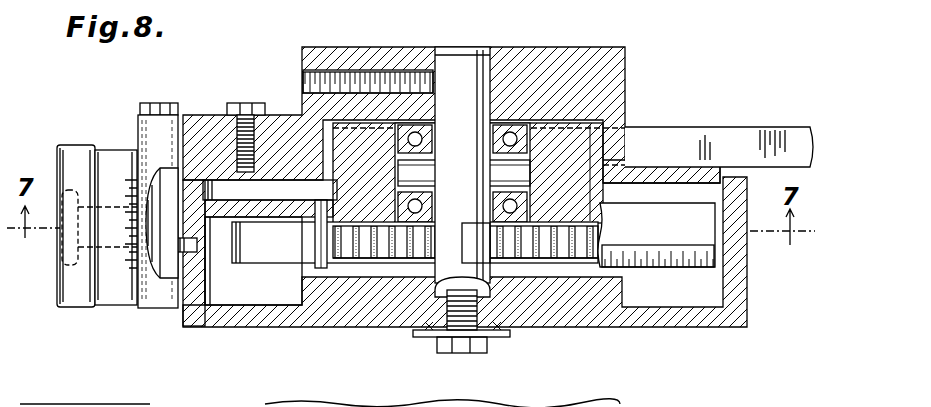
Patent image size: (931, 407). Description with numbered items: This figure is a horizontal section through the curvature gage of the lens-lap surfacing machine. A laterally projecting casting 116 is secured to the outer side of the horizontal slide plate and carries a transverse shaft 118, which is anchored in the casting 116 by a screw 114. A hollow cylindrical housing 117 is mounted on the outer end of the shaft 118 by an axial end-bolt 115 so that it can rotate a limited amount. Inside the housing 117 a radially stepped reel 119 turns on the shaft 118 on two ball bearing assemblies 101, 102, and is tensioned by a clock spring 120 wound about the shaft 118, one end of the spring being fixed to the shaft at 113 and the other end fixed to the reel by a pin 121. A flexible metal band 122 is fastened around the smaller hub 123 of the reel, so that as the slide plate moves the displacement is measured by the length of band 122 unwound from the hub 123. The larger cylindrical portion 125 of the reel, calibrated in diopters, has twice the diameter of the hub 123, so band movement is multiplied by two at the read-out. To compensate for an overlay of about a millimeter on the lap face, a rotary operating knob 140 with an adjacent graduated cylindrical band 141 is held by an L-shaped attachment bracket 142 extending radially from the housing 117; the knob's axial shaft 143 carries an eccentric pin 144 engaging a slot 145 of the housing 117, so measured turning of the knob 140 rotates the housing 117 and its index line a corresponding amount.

The ball bearing assembly 101 is at (503, 141).
The ball bearing assembly 102 is at (420, 212).
The spring fixing point 113 is at (466, 255).
The screw 114 is at (398, 73).
The axial end-bolt 115 is at (451, 347).
The casting 116 is at (625, 86).
The hollow cylindrical housing 117 is at (662, 328).
The transverse shaft 118 is at (486, 69).
The radially stepped reel 119 is at (224, 266).
The clock spring 120 is at (378, 245).
The pin 121 is at (318, 270).
The flexible band 122 is at (750, 112).
The hub 123 is at (605, 143).
The larger cylindrical portion 125 is at (707, 255).
The rotary operating knob 140 is at (106, 150).
The graduated cylindrical band 141 is at (130, 268).
The L-shaped attachment bracket 142 is at (212, 117).
The axial shaft 143 is at (63, 269).
The eccentric pin 144 is at (197, 245).
The slot 145 is at (205, 199).